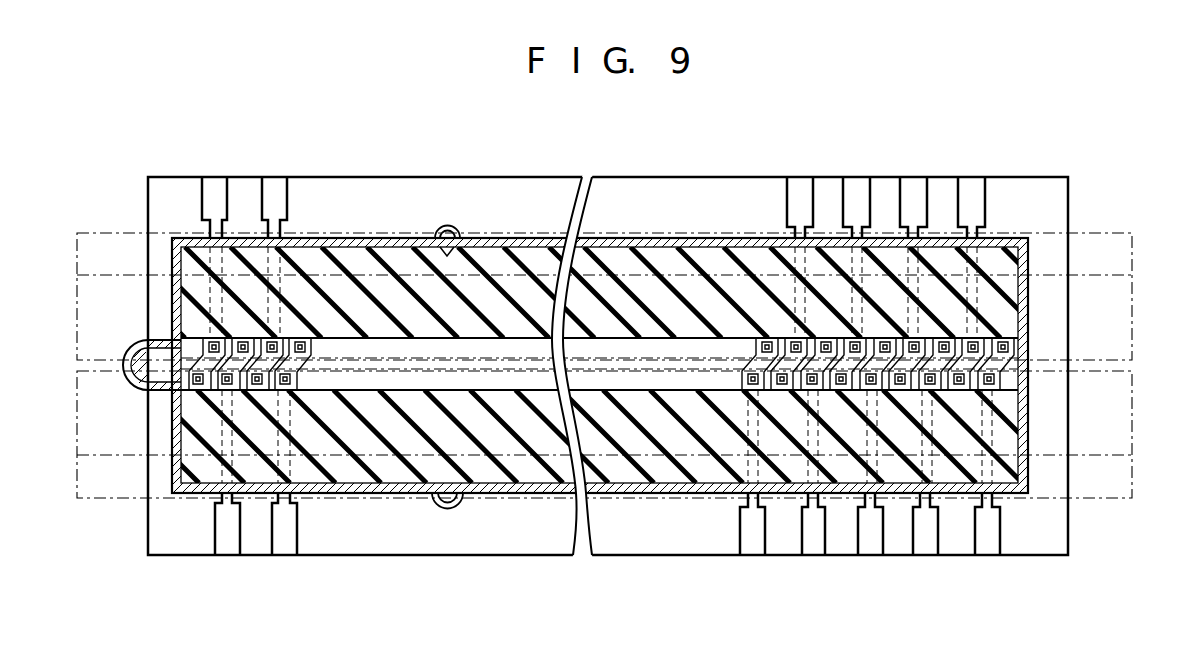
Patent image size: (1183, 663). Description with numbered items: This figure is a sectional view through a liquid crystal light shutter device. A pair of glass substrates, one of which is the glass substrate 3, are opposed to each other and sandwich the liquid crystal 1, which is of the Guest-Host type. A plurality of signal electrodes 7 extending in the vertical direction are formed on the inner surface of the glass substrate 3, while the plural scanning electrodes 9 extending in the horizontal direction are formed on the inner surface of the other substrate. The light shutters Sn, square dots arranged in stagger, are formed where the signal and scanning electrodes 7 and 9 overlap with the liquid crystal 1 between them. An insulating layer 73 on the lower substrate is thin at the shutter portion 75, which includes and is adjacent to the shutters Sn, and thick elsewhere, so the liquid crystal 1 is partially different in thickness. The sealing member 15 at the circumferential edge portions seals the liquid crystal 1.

The liquid crystal 1 is at (597, 345).
The glass substrate 3 is at (1062, 207).
The signal electrode 7 is at (216, 188).
The scanning electrode 9 is at (1127, 305).
The sealing member 15 is at (390, 240).
The insulating layer 73 is at (485, 288).
The shutter portion 75 is at (672, 362).
The light shutters Sn is at (235, 340).